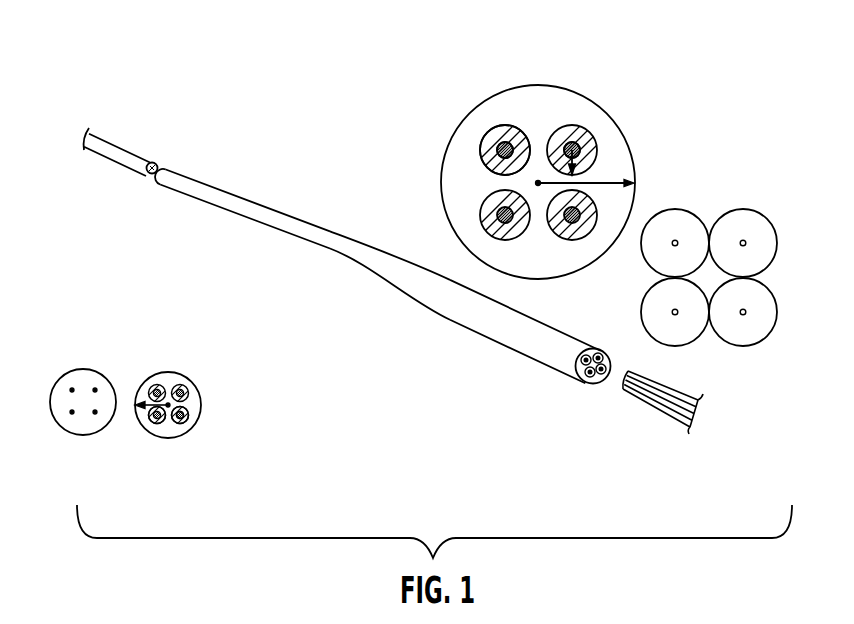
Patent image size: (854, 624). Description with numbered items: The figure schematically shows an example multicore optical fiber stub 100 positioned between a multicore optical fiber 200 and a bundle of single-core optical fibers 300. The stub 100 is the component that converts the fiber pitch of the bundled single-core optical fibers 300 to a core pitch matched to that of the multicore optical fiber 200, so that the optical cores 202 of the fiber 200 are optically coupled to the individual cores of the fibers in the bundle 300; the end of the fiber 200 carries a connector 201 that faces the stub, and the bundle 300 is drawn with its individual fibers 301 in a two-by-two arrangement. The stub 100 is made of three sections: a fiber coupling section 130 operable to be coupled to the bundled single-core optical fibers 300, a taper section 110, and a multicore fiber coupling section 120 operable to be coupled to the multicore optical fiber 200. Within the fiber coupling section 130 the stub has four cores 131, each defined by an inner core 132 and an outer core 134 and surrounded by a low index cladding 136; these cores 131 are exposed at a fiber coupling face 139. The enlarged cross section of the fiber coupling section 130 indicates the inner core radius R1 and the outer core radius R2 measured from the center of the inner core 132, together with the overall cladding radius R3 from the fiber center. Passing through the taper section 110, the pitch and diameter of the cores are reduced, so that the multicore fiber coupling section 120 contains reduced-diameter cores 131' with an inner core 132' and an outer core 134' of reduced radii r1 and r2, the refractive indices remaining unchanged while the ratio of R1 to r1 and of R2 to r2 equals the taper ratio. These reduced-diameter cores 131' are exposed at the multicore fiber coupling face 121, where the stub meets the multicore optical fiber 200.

The multicore optical fiber stub 100 is at (366, 222).
The taper section 110 is at (353, 262).
The multicore fiber coupling section 120 is at (228, 193).
The multicore fiber coupling face 121 is at (162, 177).
The fiber coupling section 130 is at (497, 342).
The cores 131 is at (505, 168).
The inner core 132 is at (480, 98).
The outer core 134 is at (523, 134).
The low index cladding 136 is at (483, 193).
The fiber coupling face 139 is at (601, 257).
The inner core radius R1 is at (572, 150).
The outer core radius R2 is at (583, 163).
The cable radius R3 is at (590, 183).
The reduced-diameter cores 131' is at (203, 423).
The inner core 132' is at (212, 387).
The outer core 134' is at (220, 407).
The reduced inner core radius r1 is at (151, 414).
The reduced outer core radius r2 is at (180, 424).
The multicore optical fiber 200 is at (112, 144).
The connector 201 is at (148, 171).
The optical cores 202 is at (72, 388).
The bundle of single-core optical fibers 300 is at (658, 424).
The connector pin sockets 301 is at (639, 371).